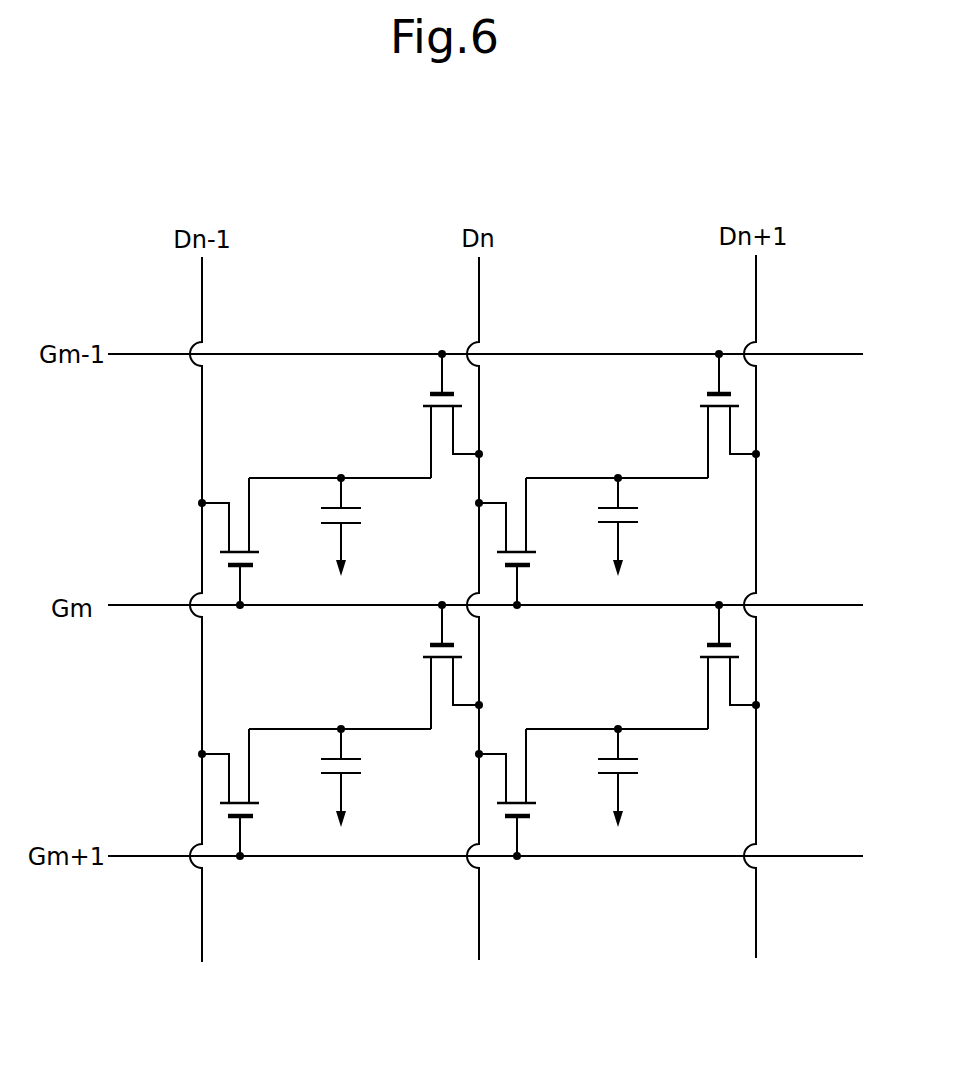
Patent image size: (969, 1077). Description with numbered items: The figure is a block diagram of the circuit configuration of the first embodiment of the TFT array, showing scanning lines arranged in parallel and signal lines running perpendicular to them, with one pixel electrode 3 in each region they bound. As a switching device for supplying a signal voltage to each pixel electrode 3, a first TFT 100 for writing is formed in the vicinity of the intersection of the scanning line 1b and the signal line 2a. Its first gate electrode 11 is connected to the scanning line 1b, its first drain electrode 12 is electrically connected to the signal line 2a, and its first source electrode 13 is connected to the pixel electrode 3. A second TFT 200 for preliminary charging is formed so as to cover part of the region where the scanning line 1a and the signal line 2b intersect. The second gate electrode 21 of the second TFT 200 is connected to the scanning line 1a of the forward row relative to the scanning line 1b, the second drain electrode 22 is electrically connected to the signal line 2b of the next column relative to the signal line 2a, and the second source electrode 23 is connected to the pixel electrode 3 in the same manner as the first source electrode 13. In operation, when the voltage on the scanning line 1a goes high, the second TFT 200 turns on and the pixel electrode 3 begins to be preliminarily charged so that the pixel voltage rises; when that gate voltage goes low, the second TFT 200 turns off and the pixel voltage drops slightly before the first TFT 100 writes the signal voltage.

The scanning line 1a is at (127, 354).
The scanning line 1b is at (127, 605).
The signal line 2a is at (201, 403).
The signal line 2b is at (479, 287).
The pixel electrode 3 is at (357, 519).
The first gate electrode 11 is at (237, 585).
The first drain electrode 12 is at (212, 500).
The first source electrode 13 is at (276, 478).
The first TFT 100 is at (251, 501).
The second gate electrode 21 is at (439, 372).
The second drain electrode 22 is at (452, 428).
The second source electrode 23 is at (430, 442).
The second TFT 200 is at (439, 414).